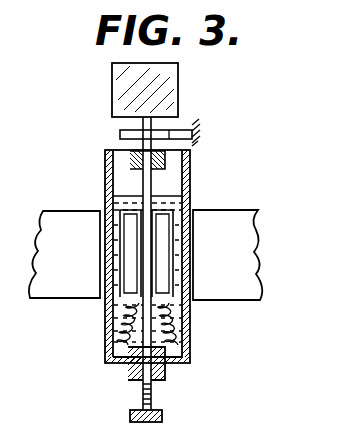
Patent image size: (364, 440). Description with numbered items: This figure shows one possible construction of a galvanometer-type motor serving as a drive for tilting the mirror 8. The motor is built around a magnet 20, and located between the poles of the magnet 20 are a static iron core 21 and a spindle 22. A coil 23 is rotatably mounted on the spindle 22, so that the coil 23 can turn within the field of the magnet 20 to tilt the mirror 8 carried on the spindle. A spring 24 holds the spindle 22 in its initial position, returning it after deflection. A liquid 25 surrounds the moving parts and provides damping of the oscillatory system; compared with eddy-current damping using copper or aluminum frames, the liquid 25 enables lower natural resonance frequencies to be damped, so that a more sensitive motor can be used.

The mirror 8 is at (178, 86).
The magnet 20 is at (43, 213).
The static iron core 21 is at (128, 286).
The spindle 22 is at (140, 181).
The coil 23 is at (168, 300).
The spring 24 is at (120, 133).
The liquid 25 is at (182, 199).